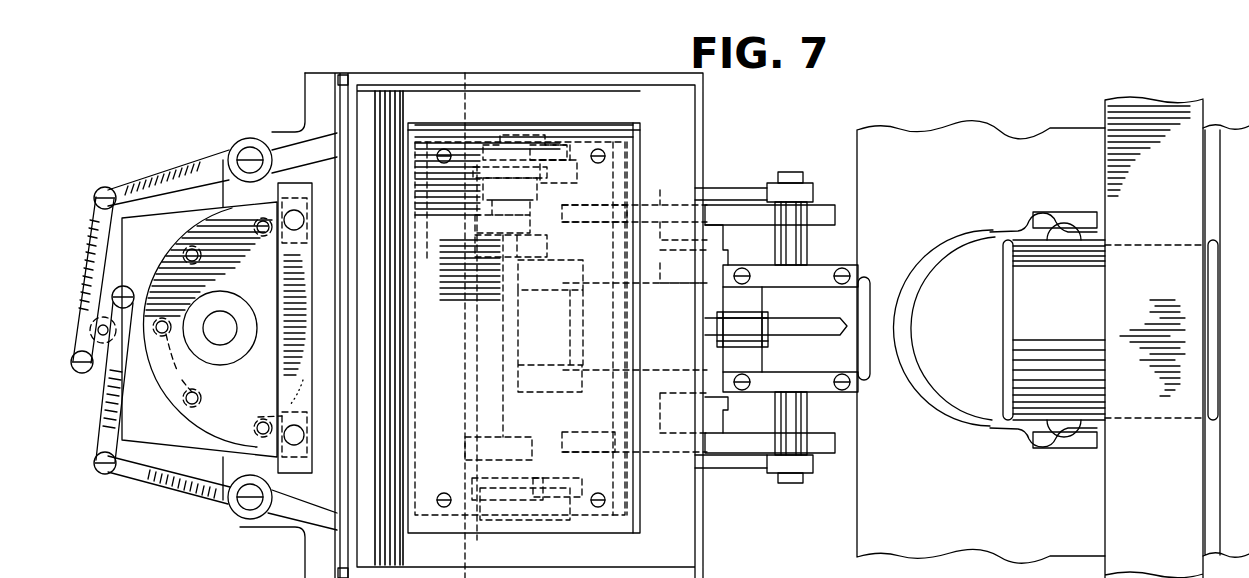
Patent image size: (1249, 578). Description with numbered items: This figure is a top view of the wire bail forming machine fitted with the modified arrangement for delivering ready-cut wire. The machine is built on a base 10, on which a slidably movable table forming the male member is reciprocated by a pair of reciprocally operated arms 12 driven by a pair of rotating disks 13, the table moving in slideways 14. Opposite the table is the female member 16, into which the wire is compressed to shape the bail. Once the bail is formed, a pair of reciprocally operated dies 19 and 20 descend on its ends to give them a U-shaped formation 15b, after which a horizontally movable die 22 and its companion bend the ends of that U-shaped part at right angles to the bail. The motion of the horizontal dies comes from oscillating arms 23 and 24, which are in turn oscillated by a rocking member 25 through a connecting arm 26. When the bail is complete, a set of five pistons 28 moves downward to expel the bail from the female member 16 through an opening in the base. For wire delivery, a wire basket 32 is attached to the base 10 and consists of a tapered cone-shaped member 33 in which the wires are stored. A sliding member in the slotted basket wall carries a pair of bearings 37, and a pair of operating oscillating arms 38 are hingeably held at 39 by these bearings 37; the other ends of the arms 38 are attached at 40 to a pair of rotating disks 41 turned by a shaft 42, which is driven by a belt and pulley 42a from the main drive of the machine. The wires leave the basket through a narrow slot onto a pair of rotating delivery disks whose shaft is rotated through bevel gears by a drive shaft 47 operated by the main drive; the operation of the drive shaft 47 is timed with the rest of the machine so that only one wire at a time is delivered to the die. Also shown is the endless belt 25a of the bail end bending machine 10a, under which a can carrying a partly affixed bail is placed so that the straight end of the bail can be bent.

The base of the bail forming machine 10 is at (298, 553).
The bail end bending machine 10a is at (1000, 123).
The reciprocally operated arms 12 is at (733, 196).
The rotating disks 13 is at (912, 353).
The slideways 14 is at (788, 289).
The U-shaped formation 15b is at (1050, 215).
The female member 16 is at (199, 329).
The reciprocally operated die 19 is at (254, 405).
The reciprocally operated die 20 is at (294, 197).
The horizontally movable die 22 is at (116, 258).
The oscillating arm 23 is at (153, 494).
The oscillating arm 24 is at (155, 182).
The rocking member 25 is at (105, 387).
The endless belt 25a is at (1177, 337).
The connecting arm 26 is at (118, 414).
The pistons 28 is at (181, 363).
The wire basket 32 is at (708, 97).
The tapered cone-shaped member 33 is at (512, 133).
The bearings 37 is at (578, 186).
The operating oscillating arms 38 is at (540, 135).
The hinge point 39 is at (602, 133).
The attachment point 40 is at (472, 132).
The rotating disks 41 is at (472, 174).
The shaft 42 is at (520, 336).
The belt and pulley 42a is at (550, 246).
The drive shaft 47 is at (790, 339).